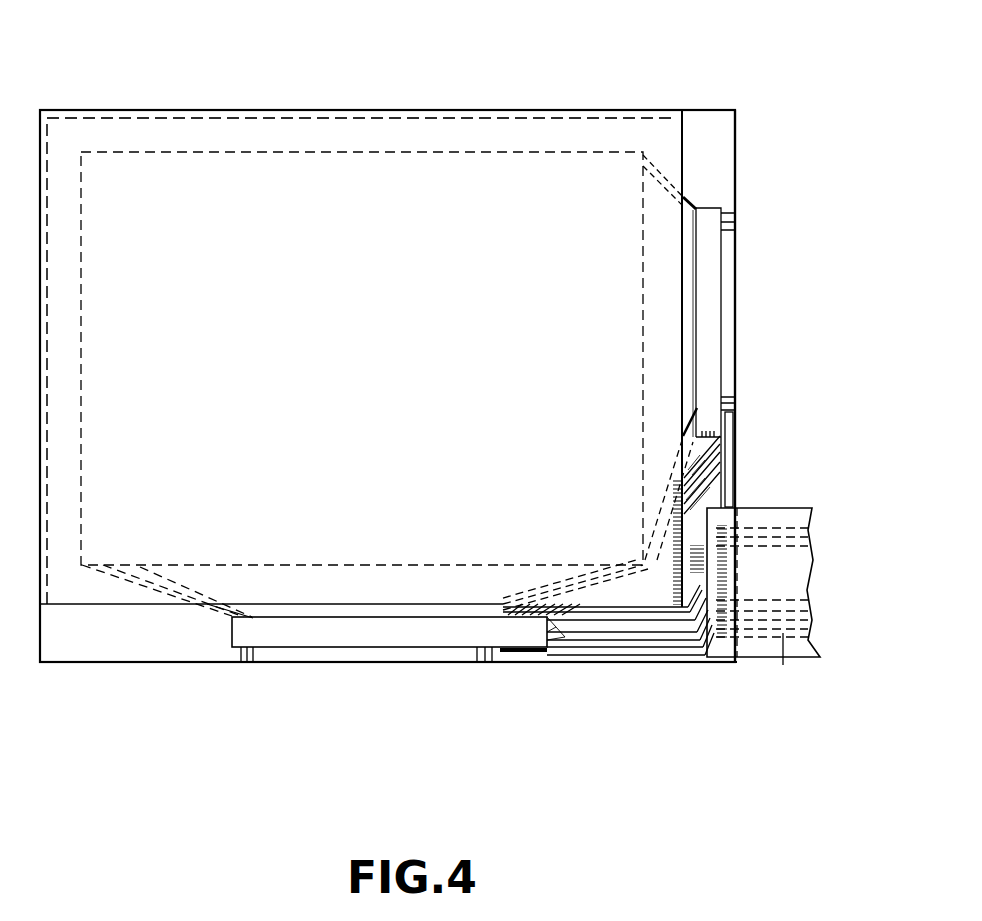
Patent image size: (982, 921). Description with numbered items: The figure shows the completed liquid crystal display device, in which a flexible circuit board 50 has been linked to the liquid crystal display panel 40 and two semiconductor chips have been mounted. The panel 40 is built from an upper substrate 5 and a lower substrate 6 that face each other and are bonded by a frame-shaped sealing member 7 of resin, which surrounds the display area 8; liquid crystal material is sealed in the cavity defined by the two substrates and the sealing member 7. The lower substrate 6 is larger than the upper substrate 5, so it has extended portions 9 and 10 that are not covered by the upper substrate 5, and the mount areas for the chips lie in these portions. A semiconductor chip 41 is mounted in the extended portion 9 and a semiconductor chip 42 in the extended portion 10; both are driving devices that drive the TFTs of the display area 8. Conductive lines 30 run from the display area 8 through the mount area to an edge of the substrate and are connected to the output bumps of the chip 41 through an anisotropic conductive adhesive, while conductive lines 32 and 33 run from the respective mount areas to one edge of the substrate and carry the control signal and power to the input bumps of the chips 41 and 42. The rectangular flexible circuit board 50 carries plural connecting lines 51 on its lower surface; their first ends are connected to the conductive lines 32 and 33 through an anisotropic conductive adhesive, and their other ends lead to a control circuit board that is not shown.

The upper substrate 5 is at (637, 112).
The lower substrate 6 is at (718, 120).
The sealing member 7 is at (193, 130).
The display area 8 is at (425, 153).
The extended portion 9 is at (103, 648).
The extended portion 10 is at (720, 182).
The conductive lines 30 is at (176, 600).
The conductive lines 32 is at (610, 636).
The conductive lines 33 is at (713, 483).
The liquid crystal display panel 40 is at (516, 107).
The semiconductor chip 41 is at (365, 640).
The semiconductor chip 42 is at (710, 323).
The flexible circuit board 50 is at (782, 520).
The connecting lines 51 is at (783, 633).